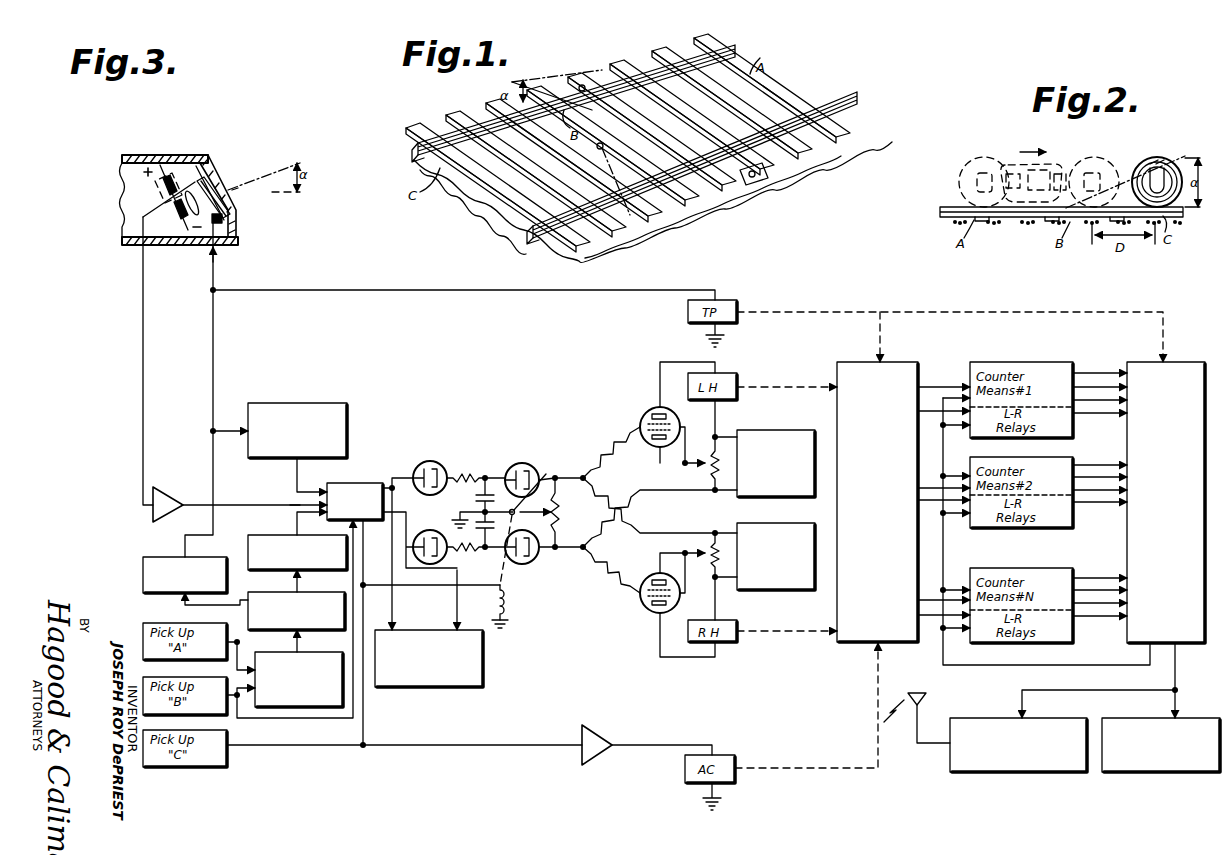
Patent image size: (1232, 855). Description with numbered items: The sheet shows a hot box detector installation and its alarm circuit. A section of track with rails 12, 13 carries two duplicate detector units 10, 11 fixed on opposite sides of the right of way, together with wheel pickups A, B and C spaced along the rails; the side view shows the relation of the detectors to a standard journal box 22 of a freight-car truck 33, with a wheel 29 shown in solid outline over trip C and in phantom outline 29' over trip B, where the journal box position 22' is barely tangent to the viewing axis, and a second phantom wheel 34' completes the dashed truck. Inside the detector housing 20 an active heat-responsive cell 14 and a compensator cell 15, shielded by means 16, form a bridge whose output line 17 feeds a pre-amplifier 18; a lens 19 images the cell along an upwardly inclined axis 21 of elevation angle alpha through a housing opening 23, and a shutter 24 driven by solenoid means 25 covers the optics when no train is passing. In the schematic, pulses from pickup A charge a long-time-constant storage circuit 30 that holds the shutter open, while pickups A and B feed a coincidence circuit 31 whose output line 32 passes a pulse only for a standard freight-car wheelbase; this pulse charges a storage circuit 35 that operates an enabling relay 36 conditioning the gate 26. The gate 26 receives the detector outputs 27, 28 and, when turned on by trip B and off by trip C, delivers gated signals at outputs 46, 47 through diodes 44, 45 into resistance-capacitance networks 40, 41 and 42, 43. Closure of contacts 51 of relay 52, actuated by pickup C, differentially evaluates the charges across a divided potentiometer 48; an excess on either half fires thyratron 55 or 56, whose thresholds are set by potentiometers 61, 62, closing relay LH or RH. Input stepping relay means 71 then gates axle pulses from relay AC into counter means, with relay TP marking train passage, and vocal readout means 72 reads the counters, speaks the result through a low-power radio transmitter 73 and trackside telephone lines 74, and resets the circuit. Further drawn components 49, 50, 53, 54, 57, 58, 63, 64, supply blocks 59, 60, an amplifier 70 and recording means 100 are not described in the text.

In FIG. 1, the detector unit 10 is at (586, 86).
In FIG. 2, the detector unit 10 is at (1040, 224).
In FIG. 3, the detector unit 10 is at (160, 154).
In FIG. 1, the detector unit 11 is at (756, 180).
In FIG. 3, the detector unit 11 is at (332, 403).
In FIG. 1, the rail 12 is at (738, 64).
In FIG. 1, the rail 13 is at (862, 94).
In FIG. 3, the active heat-responsive cell 14 is at (162, 230).
In FIG. 3, the compensator cell 15 is at (160, 188).
In FIG. 3, the shielding means 16 is at (174, 170).
In FIG. 3, the bridge output line 17 is at (140, 290).
In FIG. 3, the pre-amplifier means 18 is at (168, 490).
In FIG. 3, the lens 19 is at (194, 192).
In FIG. 3, the detector housing 20 is at (134, 155).
In FIG. 1, the response axis 21 is at (538, 80).
In FIG. 2, the response axis 21 is at (1188, 156).
In FIG. 3, the response axis 21 is at (252, 184).
In FIG. 2, the journal box 22 is at (1156, 174).
In FIG. 2, the journal box position 22' is at (1082, 161).
In FIG. 3, the housing opening 23 is at (238, 188).
In FIG. 3, the shutter means 24 is at (210, 186).
In FIG. 3, the solenoid means 25 is at (228, 214).
In FIG. 3, the gating means 26 is at (364, 484).
In FIG. 3, the detector output 27 is at (284, 514).
In FIG. 3, the detector output 28 is at (294, 484).
In FIG. 2, the truck wheel 29 is at (1163, 141).
In FIG. 2, the phantom wheel outline 29' is at (1097, 168).
In FIG. 3, the storage circuit 30 is at (150, 558).
In FIG. 3, the coincidence circuit 31 is at (322, 654).
In FIG. 3, the output line 32 is at (286, 652).
In FIG. 2, the truck 33 is at (1010, 166).
In FIG. 2, the phantom wheel outline 34' is at (967, 173).
In FIG. 3, the storage circuit 35 is at (256, 596).
In FIG. 3, the enabling relay 36 is at (274, 536).
In FIG. 3, the resistance 40 is at (466, 472).
In FIG. 3, the capacitor 41 is at (476, 497).
In FIG. 3, the resistance 42 is at (472, 548).
In FIG. 3, the capacitor 43 is at (498, 560).
In FIG. 3, the diode 44 is at (428, 461).
In FIG. 3, the diode 45 is at (420, 530).
In FIG. 3, the gate output 46 is at (386, 484).
In FIG. 3, the gate output 47 is at (411, 512).
In FIG. 3, the divided potentiometer 48 is at (562, 508).
In FIG. 3, the tube 49 is at (512, 466).
In FIG. 3, the tube 50 is at (516, 561).
In FIG. 3, the relay contacts 51 is at (548, 474).
In FIG. 3, the relay 52 is at (506, 616).
In FIG. 3, the junction 53 is at (556, 472).
In FIG. 3, the junction 54 is at (552, 552).
In FIG. 3, the thyratron 55 is at (648, 410).
In FIG. 3, the thyratron 56 is at (652, 574).
In FIG. 3, the resistor 57 is at (604, 432).
In FIG. 3, the resistor 58 is at (606, 562).
In FIG. 3, the power supply 59 is at (788, 430).
In FIG. 3, the power supply 60 is at (800, 590).
In FIG. 3, the potentiometer 61 is at (702, 436).
In FIG. 3, the potentiometer 62 is at (704, 592).
In FIG. 3, the resistor 63 is at (642, 490).
In FIG. 3, the resistor 64 is at (664, 526).
In FIG. 3, the amplifier 70 is at (604, 758).
In FIG. 3, the input stepping relay means 71 is at (846, 652).
In FIG. 3, the vocal readout means 72 is at (1184, 362).
In FIG. 3, the radio transmitter 73 is at (996, 776).
In FIG. 3, the telephone lines 74 is at (1154, 776).
In FIG. 3, the amplitude recording means 100 is at (438, 628).